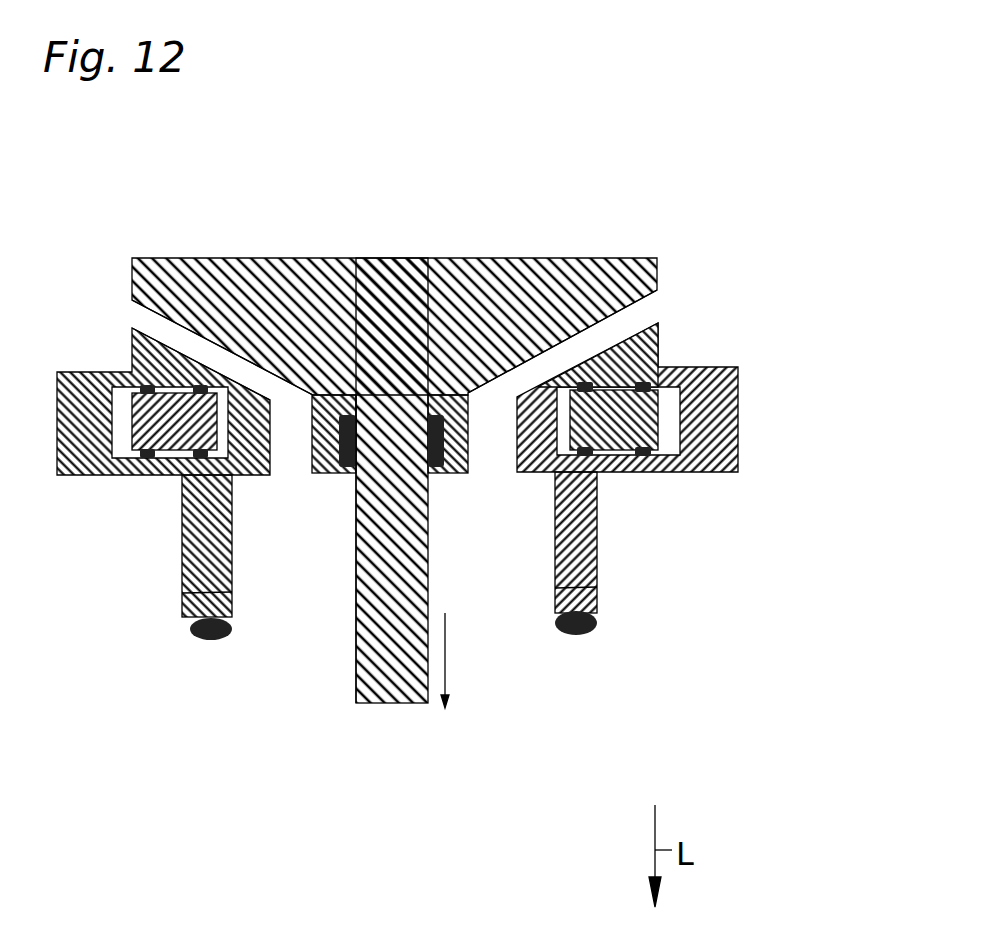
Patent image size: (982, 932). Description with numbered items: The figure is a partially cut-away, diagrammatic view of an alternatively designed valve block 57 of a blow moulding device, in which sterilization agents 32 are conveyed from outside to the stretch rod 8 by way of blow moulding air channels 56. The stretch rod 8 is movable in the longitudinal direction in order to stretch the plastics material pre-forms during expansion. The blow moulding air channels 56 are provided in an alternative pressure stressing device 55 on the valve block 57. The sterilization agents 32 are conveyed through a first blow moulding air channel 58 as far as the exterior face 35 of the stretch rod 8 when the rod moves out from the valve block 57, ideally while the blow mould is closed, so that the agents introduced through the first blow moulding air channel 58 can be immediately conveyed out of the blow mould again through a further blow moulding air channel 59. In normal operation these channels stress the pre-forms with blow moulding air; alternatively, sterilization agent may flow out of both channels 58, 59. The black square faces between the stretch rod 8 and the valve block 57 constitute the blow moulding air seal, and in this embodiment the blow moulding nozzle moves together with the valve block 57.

The pressure stressing device 55 is at (578, 138).
The valve block 57 is at (210, 260).
The blow moulding air channels 56 is at (567, 355).
The stretch rod 8 is at (380, 260).
The exterior face 35 is at (350, 579).
The first blow moulding air channel 58 is at (548, 400).
The further blow moulding air channel 59 is at (255, 427).
The sterilization agent 32 is at (148, 325).